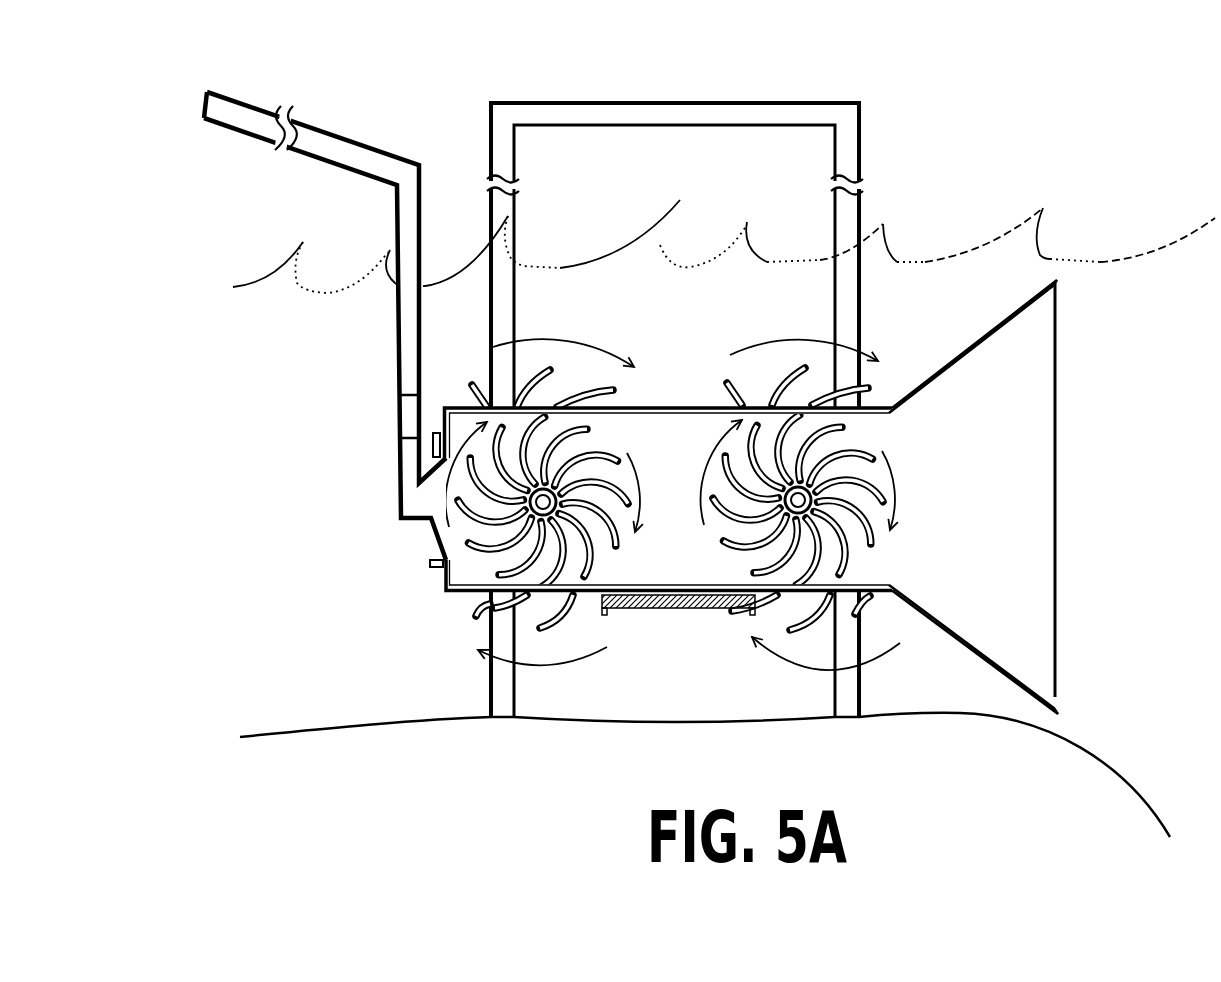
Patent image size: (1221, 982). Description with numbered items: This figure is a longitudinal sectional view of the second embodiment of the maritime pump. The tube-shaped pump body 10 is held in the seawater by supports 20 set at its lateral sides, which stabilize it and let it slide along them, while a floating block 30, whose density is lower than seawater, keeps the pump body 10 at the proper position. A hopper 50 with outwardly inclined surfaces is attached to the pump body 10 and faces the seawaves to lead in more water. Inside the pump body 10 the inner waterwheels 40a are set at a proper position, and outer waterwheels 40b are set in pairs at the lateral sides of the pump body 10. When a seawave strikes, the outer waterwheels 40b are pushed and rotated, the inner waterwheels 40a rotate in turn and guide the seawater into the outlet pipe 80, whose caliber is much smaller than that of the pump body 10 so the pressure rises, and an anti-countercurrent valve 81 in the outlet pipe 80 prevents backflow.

The pump body 10 is at (885, 408).
The supports 20 is at (788, 117).
The floating block 30 is at (630, 608).
The inner waterwheels 40a is at (773, 548).
The outer waterwheels 40b is at (792, 402).
The hopper 50 is at (1028, 357).
The outlet pipe 80 is at (358, 158).
The anti-countercurrent valve 81 is at (413, 428).